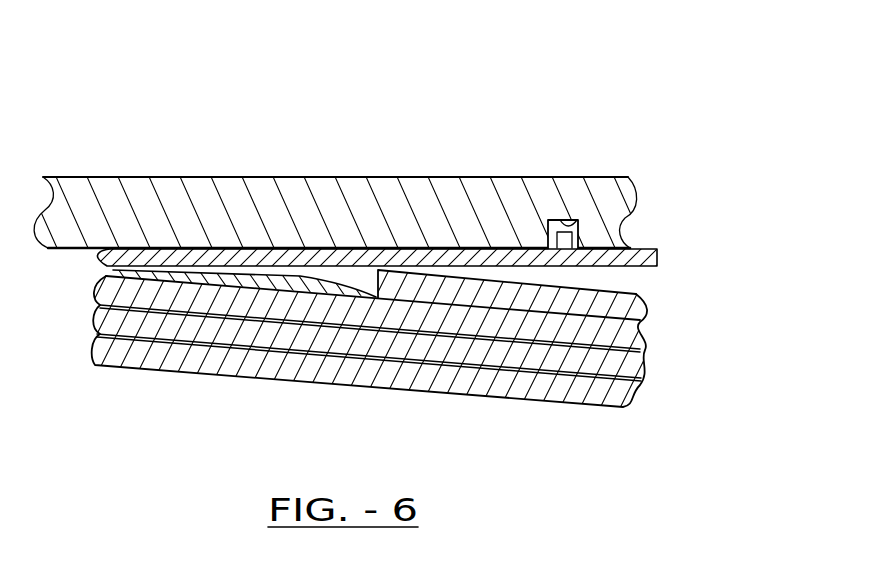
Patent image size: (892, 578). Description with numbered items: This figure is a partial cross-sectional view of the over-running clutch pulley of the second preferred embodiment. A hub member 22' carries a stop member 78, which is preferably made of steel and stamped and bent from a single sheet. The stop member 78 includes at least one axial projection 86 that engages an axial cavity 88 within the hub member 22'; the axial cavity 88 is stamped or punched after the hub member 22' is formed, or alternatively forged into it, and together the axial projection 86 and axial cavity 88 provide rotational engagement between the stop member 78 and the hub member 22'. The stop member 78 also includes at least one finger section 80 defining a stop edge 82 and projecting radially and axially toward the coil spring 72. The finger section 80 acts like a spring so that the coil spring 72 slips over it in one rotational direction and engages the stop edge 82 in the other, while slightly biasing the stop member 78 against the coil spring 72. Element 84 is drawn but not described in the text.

The hub member 22' is at (351, 176).
The stop member 78 is at (463, 253).
The axial cavity 88 is at (565, 242).
The axial projection 86 is at (625, 219).
The thin plate 84 is at (652, 258).
The finger section 80 is at (273, 274).
The stop edge 82 is at (383, 280).
The coil spring 72 is at (560, 356).